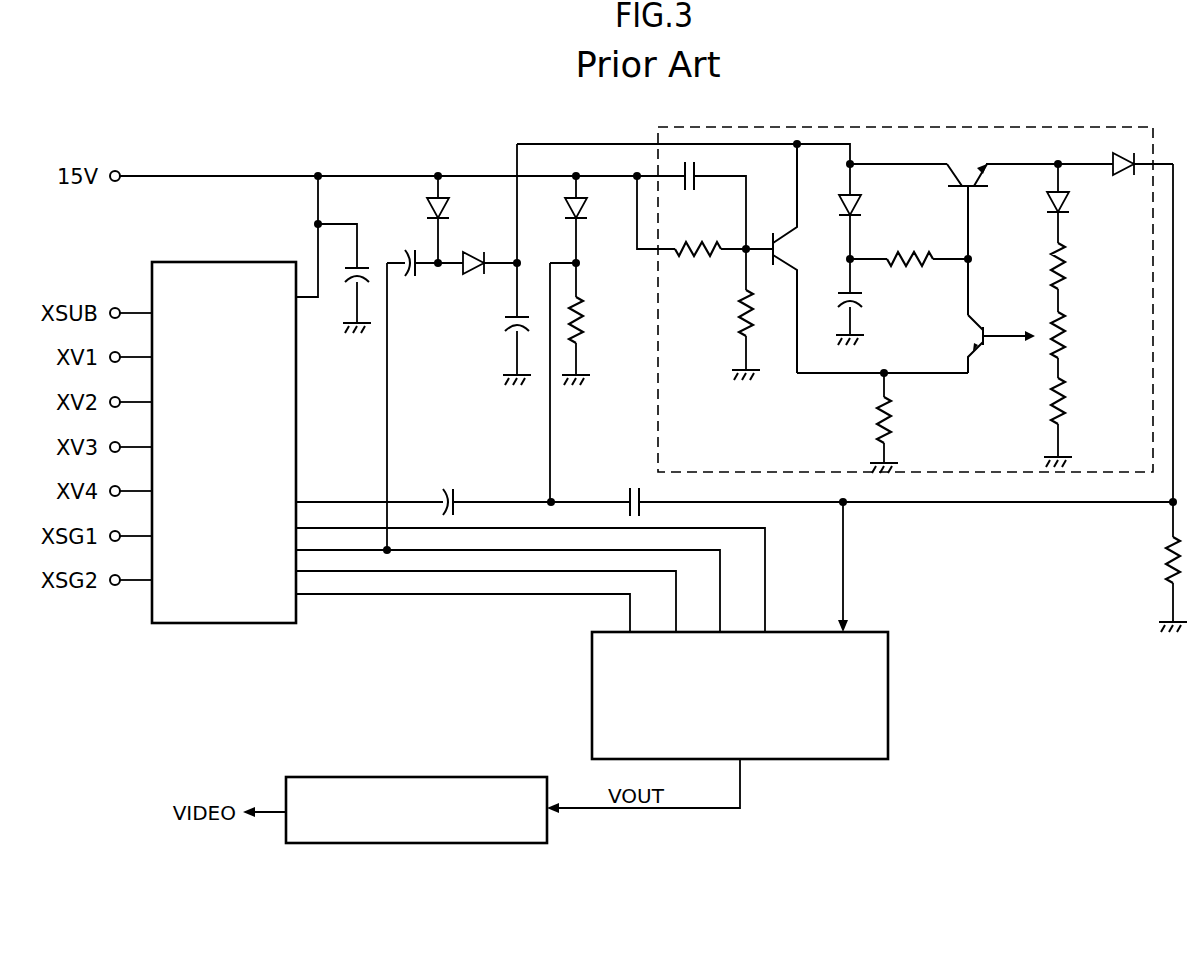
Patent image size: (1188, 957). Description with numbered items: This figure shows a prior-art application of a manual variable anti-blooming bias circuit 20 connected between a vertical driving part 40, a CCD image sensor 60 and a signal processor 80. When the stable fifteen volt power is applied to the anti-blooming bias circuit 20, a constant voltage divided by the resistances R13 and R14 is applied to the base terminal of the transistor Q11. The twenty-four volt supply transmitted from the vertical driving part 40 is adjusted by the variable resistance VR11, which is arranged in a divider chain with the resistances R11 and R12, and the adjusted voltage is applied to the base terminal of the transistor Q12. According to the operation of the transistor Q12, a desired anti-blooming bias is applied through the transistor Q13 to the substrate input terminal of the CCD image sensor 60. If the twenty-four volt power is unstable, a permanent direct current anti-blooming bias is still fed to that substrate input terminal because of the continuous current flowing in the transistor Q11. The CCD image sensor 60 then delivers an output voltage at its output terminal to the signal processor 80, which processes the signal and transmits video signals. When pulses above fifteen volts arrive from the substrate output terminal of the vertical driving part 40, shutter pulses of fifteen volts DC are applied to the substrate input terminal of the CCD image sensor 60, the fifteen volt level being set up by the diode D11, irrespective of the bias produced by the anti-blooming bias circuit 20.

The anti-blooming bias circuit 20 is at (908, 131).
The vertical driving part 40 is at (203, 268).
The CCD image sensor 60 is at (592, 703).
The signal processor 80 is at (408, 779).
The diode D11 is at (553, 219).
The transistor Q11 is at (808, 258).
The transistor Q12 is at (980, 344).
The transistor Q13 is at (966, 225).
The resistance R11 is at (1085, 266).
The resistance R12 is at (1085, 401).
The resistance R13 is at (698, 266).
The resistance R14 is at (724, 314).
The variable resistance VR11 is at (1092, 335).